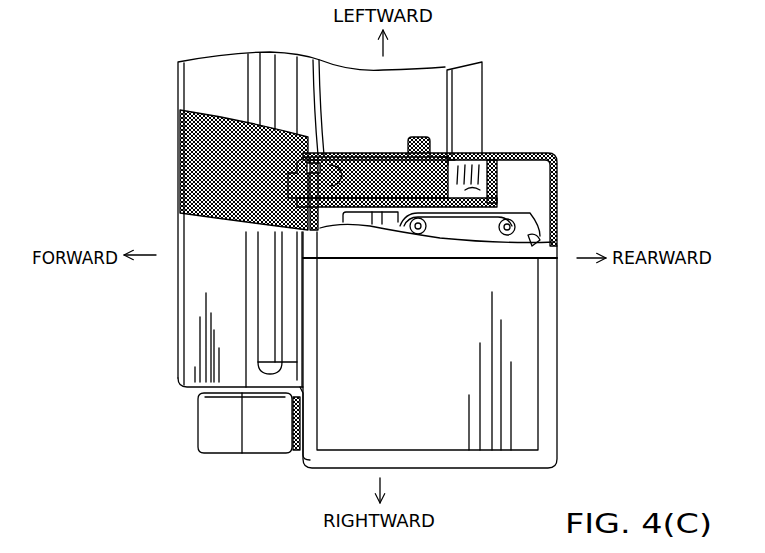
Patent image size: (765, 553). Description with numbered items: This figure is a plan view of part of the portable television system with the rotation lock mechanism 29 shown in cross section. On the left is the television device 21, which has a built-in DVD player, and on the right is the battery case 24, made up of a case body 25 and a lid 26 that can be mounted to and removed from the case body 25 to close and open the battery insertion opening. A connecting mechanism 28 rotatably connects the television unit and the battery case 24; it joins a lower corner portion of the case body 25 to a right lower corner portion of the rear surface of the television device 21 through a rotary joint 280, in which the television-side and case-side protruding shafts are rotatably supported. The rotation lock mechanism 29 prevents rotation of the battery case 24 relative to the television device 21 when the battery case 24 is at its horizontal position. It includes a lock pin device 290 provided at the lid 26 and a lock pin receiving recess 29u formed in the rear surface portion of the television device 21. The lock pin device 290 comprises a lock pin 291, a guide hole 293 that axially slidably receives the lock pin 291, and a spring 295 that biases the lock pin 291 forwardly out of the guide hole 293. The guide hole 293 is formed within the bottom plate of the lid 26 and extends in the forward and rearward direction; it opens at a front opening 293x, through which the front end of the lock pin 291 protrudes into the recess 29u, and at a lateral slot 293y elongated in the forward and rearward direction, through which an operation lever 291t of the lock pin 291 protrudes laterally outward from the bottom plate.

The television device 21 is at (487, 104).
The battery case 24 is at (563, 356).
The case body 25 is at (553, 384).
The lid 26 is at (561, 203).
The connecting mechanism 28 is at (195, 425).
The rotary joint 280 is at (257, 436).
The rotation lock mechanism 29 is at (300, 124).
The lock pin receiving recess 29u is at (330, 178).
The lock pin device 290 is at (397, 150).
The lock pin 291 is at (367, 187).
The operation lever 291t is at (447, 155).
The guide hole 293 is at (400, 207).
The front opening 293x is at (334, 183).
The lateral slot 293y is at (450, 158).
The spring 295 is at (495, 192).